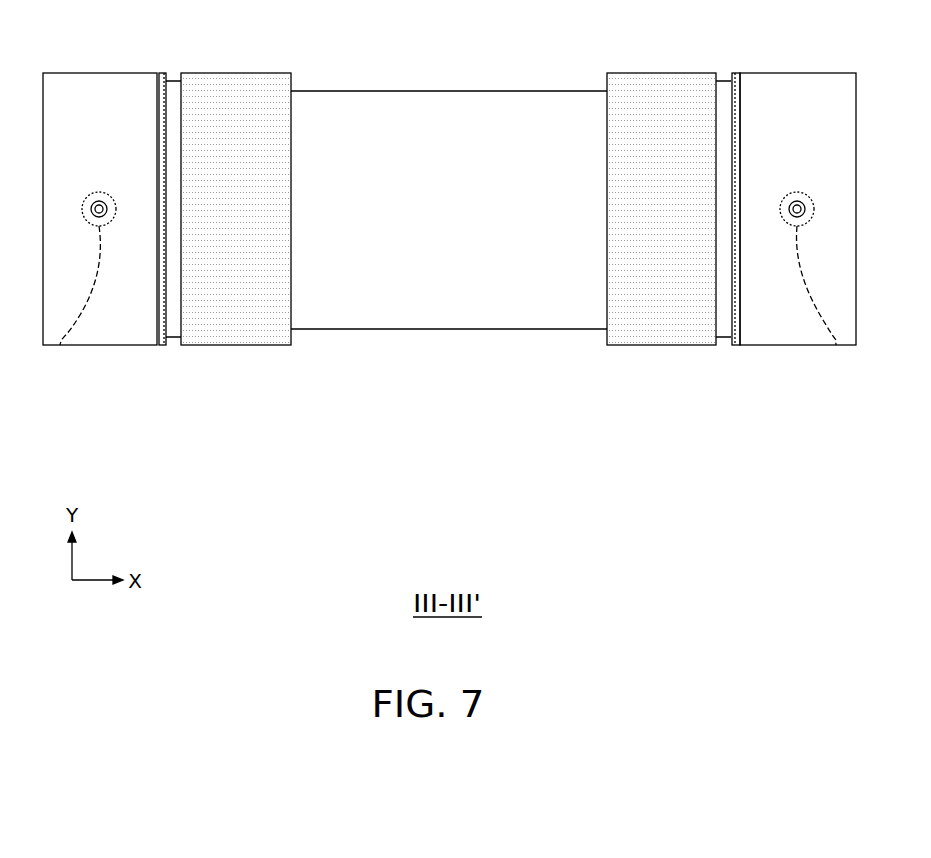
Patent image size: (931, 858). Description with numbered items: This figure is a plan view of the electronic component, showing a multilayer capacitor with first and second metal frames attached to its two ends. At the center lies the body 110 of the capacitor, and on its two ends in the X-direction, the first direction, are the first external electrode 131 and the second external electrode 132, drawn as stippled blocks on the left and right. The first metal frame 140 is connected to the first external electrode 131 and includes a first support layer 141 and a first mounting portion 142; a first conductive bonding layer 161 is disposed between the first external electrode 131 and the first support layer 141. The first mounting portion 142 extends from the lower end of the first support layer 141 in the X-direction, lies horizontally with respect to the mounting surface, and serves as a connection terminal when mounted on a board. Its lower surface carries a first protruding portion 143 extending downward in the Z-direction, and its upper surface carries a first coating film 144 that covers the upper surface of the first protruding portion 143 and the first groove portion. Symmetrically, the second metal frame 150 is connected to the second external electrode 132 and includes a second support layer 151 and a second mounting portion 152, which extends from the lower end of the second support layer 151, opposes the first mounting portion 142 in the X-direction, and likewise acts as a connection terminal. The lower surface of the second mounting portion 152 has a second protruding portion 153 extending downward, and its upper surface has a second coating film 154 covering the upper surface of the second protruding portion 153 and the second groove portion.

The body 110 is at (453, 91).
The first external electrode 131 is at (229, 58).
The second external electrode 132 is at (654, 58).
The first metal frame 140 is at (119, 243).
The first support layer 141 is at (160, 335).
The first mounting portion 142 is at (112, 335).
The first protruding portion 143 is at (70, 332).
The first coating film 144 is at (99, 192).
The second metal frame 150 is at (778, 242).
The second support layer 151 is at (734, 335).
The second mounting portion 152 is at (784, 335).
The second protruding portion 153 is at (827, 332).
The second coating film 154 is at (797, 192).
The first conductive bonding layer 161 is at (173, 97).